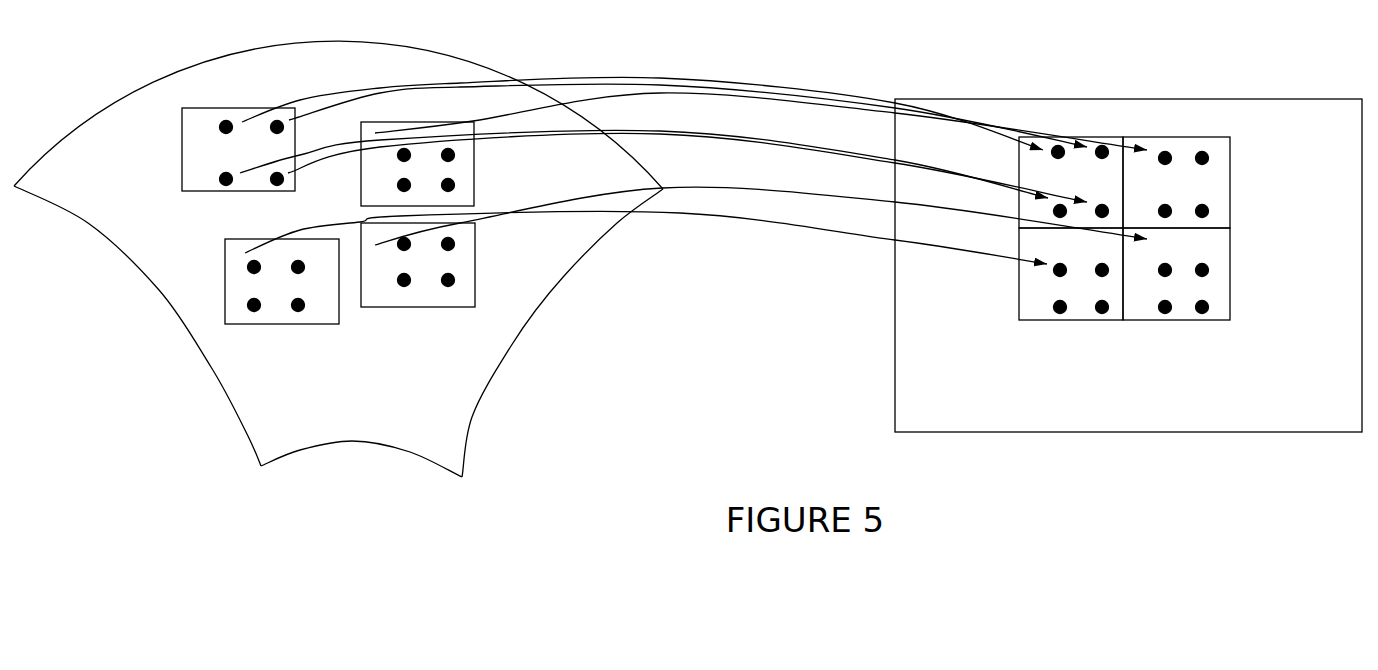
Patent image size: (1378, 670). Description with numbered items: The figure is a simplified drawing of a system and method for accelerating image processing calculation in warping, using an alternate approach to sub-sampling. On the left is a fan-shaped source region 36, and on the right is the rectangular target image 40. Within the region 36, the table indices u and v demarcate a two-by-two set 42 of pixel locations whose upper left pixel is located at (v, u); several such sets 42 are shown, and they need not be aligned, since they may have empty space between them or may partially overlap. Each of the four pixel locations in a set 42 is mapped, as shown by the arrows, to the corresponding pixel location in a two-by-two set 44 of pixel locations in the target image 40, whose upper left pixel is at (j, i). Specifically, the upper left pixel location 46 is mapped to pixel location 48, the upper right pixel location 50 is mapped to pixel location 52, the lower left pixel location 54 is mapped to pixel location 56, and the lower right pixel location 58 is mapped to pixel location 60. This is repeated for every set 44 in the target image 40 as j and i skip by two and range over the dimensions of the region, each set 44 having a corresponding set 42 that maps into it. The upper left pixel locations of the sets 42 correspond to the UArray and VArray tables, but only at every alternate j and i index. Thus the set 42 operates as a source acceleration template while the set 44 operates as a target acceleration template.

The region 36 is at (453, 53).
The target image 40 is at (1202, 98).
The 2×2 set of pixel locations 42 is at (187, 173).
The 2×2 set of pixel locations 44 is at (1117, 217).
The upper left pixel location 46 is at (225, 120).
The upper right pixel location 50 is at (277, 120).
The lower left pixel location 54 is at (225, 186).
The lower right pixel location 58 is at (276, 186).
The pixel location 48 is at (1058, 145).
The pixel location 52 is at (1100, 145).
The pixel location 56 is at (1062, 218).
The pixel location 60 is at (1102, 218).